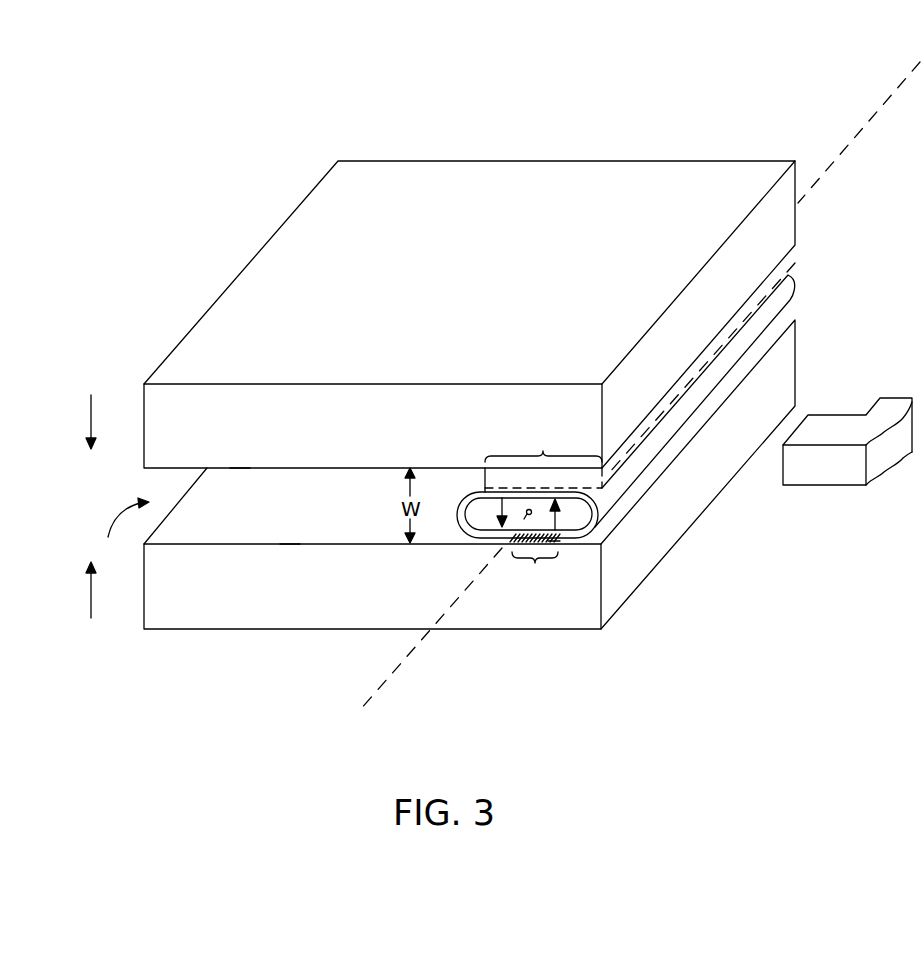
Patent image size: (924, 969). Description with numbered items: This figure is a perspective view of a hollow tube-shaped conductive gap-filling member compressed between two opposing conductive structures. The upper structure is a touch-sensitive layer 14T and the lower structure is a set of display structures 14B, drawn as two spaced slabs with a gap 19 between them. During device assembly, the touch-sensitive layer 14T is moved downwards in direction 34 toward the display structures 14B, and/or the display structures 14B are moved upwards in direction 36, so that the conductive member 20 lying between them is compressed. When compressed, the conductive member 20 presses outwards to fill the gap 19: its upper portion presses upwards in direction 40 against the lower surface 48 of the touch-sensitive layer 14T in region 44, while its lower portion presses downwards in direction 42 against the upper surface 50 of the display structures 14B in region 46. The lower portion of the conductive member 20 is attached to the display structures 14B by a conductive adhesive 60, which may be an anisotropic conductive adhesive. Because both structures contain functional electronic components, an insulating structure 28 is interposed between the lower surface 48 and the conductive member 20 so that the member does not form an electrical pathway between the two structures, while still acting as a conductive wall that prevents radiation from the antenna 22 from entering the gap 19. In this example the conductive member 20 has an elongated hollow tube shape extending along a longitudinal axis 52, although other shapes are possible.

The touch-sensitive layer 14T is at (150, 394).
The display structures 14B is at (150, 622).
The direction 34 is at (90, 418).
The direction 36 is at (90, 595).
The gap 19 is at (124, 531).
The lower surface 48 is at (241, 471).
The upper surface 50 is at (290, 541).
The insulating structure 28 is at (790, 257).
The region 44 is at (543, 445).
The longitudinal axis 52 is at (380, 686).
The conductive member 20 is at (600, 522).
The direction 42 is at (502, 506).
The direction 40 is at (557, 518).
The region 46 is at (535, 559).
The conductive adhesive 60 is at (558, 541).
The antenna 22 is at (821, 482).